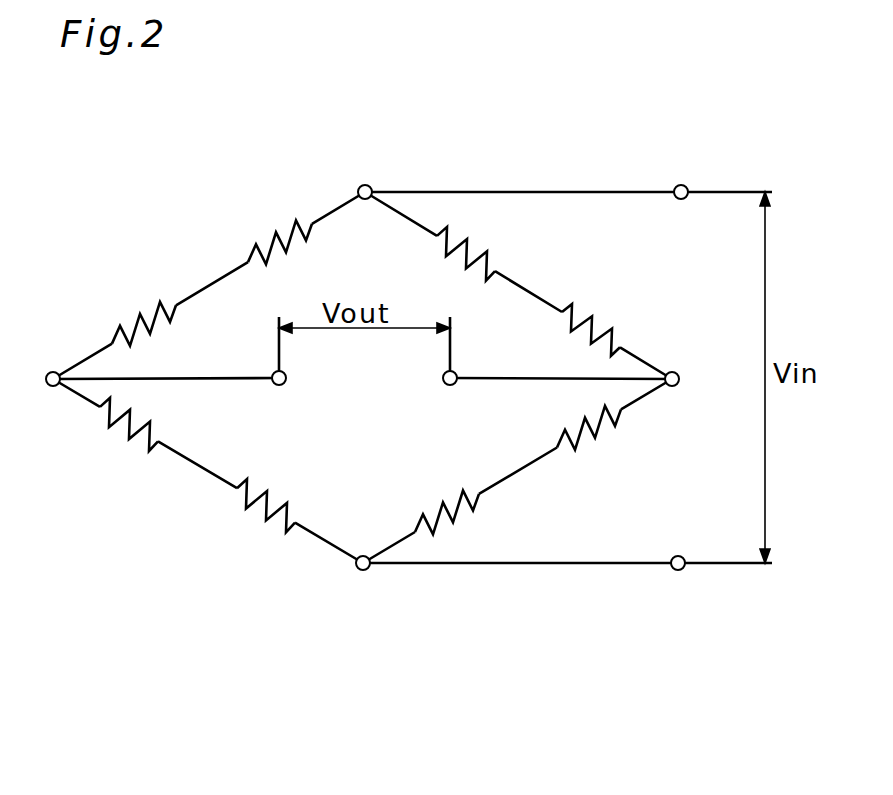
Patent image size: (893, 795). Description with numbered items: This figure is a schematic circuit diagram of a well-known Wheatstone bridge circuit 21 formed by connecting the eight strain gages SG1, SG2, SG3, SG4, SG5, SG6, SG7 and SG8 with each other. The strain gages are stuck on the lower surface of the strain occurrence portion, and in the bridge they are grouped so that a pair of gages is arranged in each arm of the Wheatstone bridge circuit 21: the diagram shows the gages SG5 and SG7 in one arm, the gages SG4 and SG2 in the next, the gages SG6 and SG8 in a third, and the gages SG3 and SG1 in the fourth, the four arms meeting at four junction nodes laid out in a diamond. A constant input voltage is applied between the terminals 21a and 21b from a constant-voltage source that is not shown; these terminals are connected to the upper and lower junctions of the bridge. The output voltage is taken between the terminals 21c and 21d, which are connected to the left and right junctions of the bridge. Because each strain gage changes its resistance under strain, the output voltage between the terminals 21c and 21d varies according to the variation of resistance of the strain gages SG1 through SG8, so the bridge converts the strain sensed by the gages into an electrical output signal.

The Wheatstone bridge circuit 21 is at (523, 165).
The terminal 21a is at (680, 186).
The terminal 21b is at (681, 570).
The terminal 21c is at (279, 386).
The terminal 21d is at (450, 386).
The strain gage SG1 is at (606, 427).
The strain gage SG2 is at (598, 316).
The strain gage SG3 is at (466, 513).
The strain gage SG4 is at (472, 243).
The strain gage SG5 is at (273, 233).
The strain gage SG6 is at (118, 433).
The strain gage SG7 is at (132, 311).
The strain gage SG8 is at (253, 512).